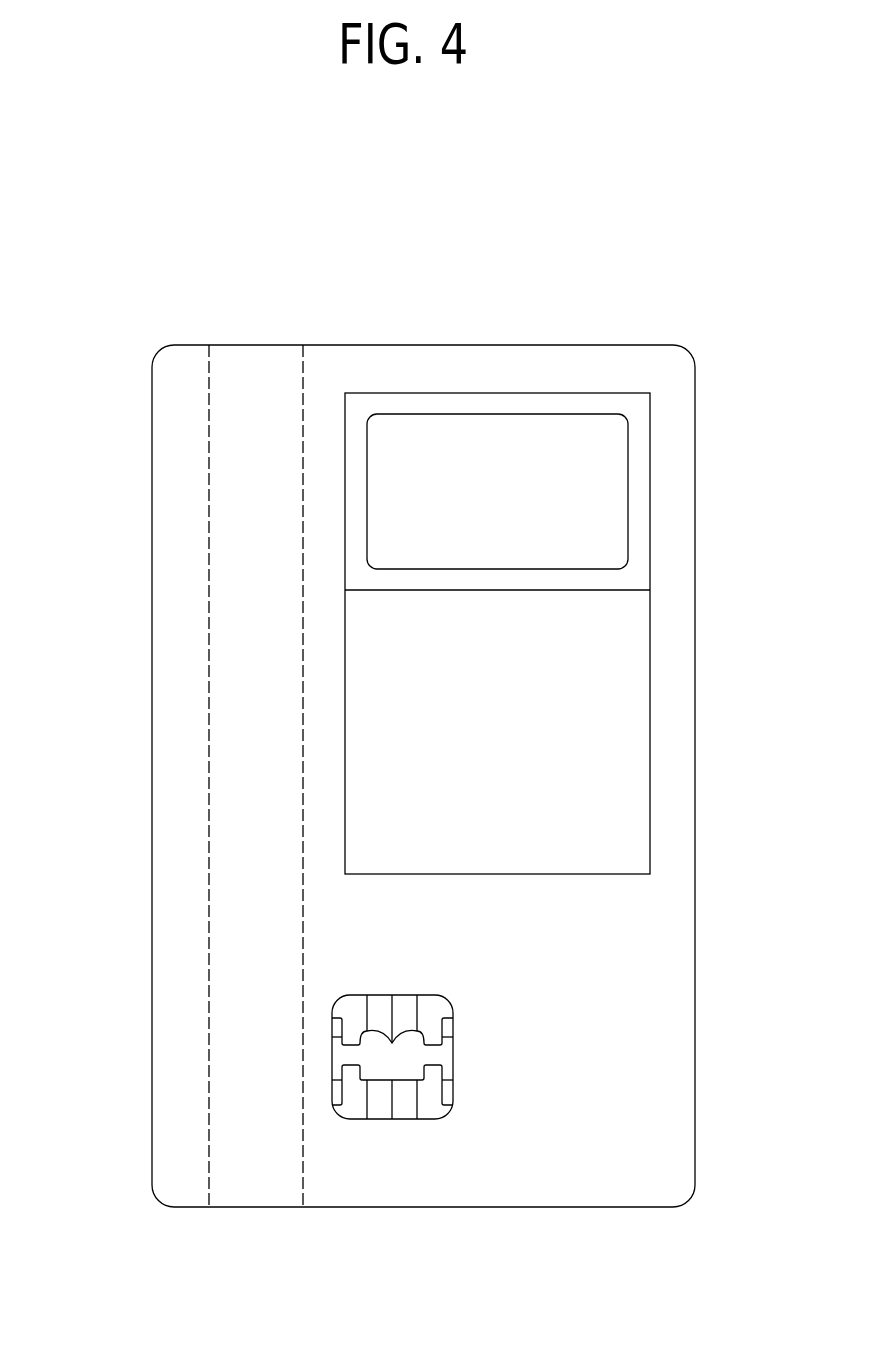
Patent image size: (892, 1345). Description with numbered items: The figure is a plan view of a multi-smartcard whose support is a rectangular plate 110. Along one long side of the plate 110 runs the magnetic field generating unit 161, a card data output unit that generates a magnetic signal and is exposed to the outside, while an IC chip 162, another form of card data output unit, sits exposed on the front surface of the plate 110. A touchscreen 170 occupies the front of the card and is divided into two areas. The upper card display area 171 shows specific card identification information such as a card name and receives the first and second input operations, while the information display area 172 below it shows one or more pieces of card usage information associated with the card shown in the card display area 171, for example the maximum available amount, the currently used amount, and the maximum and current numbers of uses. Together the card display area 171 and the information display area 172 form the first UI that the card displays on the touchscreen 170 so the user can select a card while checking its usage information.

The plate 110 is at (677, 947).
The magnetic field generating unit 161 is at (235, 458).
The IC chip 162 is at (332, 1050).
The touchscreen 170 is at (573, 392).
The card display area 171 is at (617, 478).
The information display area 172 is at (627, 647).